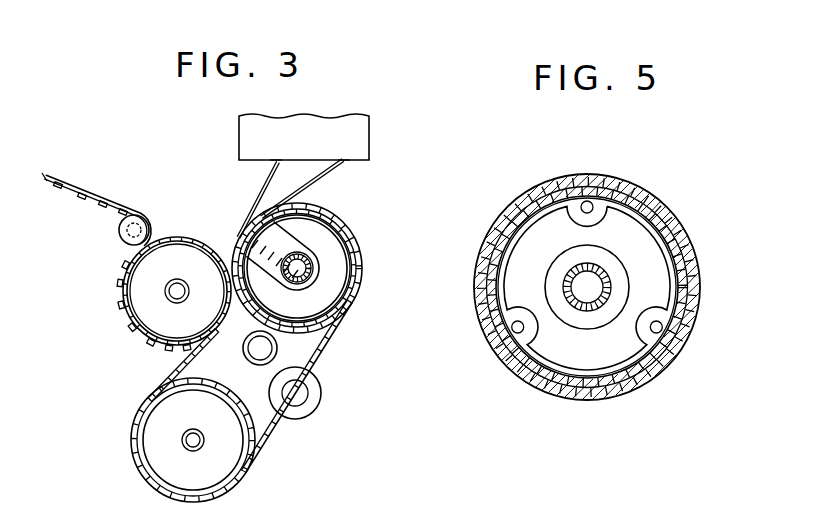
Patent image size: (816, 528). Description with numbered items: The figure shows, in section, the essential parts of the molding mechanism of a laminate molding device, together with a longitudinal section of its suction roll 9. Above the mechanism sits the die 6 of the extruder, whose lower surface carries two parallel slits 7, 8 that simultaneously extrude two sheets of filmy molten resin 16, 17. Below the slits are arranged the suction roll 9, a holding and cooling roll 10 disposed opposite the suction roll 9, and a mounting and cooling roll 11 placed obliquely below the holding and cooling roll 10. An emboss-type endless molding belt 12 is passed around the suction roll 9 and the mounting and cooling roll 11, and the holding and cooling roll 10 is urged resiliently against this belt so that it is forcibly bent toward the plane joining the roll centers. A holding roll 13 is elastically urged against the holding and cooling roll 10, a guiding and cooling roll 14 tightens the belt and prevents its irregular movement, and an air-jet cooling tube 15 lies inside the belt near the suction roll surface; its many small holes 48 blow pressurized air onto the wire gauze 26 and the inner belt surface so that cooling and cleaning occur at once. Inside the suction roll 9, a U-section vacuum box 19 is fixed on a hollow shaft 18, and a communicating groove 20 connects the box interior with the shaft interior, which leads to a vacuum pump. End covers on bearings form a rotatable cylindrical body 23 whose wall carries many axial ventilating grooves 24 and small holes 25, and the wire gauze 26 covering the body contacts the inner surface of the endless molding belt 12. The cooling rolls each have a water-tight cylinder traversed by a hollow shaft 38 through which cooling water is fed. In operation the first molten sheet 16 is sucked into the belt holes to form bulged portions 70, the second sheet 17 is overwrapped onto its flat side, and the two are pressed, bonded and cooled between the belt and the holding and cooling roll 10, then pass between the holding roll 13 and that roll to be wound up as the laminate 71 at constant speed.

In FIG. 3, the die 6 is at (365, 132).
In FIG. 3, the slit 7 is at (344, 163).
In FIG. 3, the slit 8 is at (268, 164).
In FIG. 3, the suction roll 9 is at (342, 278).
In FIG. 5, the suction roll 9 is at (687, 232).
In FIG. 3, the holding and cooling roll 10 is at (143, 308).
In FIG. 3, the mounting and cooling roll 11 is at (230, 462).
In FIG. 3, the endless molding belt 12 is at (315, 347).
In FIG. 3, the holding roll 13 is at (142, 217).
In FIG. 3, the guiding and cooling roll 14 is at (315, 396).
In FIG. 3, the air-jet cooling tube 15 is at (246, 352).
In FIG. 3, the filmy molten resin sheet 16 is at (310, 182).
In FIG. 3, the filmy molten resin sheet 17 is at (263, 195).
In FIG. 3, the hollow shaft 18 is at (303, 283).
In FIG. 5, the hollow shaft 18 is at (610, 278).
In FIG. 3, the vacuum box 19 is at (318, 254).
In FIG. 3, the communicating groove 20 is at (282, 256).
In FIG. 5, the cylindrical body 23 is at (670, 215).
In FIG. 5, the axial ventilating grooves 24 is at (617, 178).
In FIG. 5, the small holes 25 is at (560, 197).
In FIG. 3, the wire gauze 26 is at (347, 226).
In FIG. 5, the wire gauze 26 is at (570, 180).
In FIG. 3, the hollow shaft 38 is at (183, 433).
In FIG. 3, the small holes 48 is at (253, 330).
In FIG. 3, the bulged portions 70 is at (170, 350).
In FIG. 3, the laminate 71 is at (95, 194).